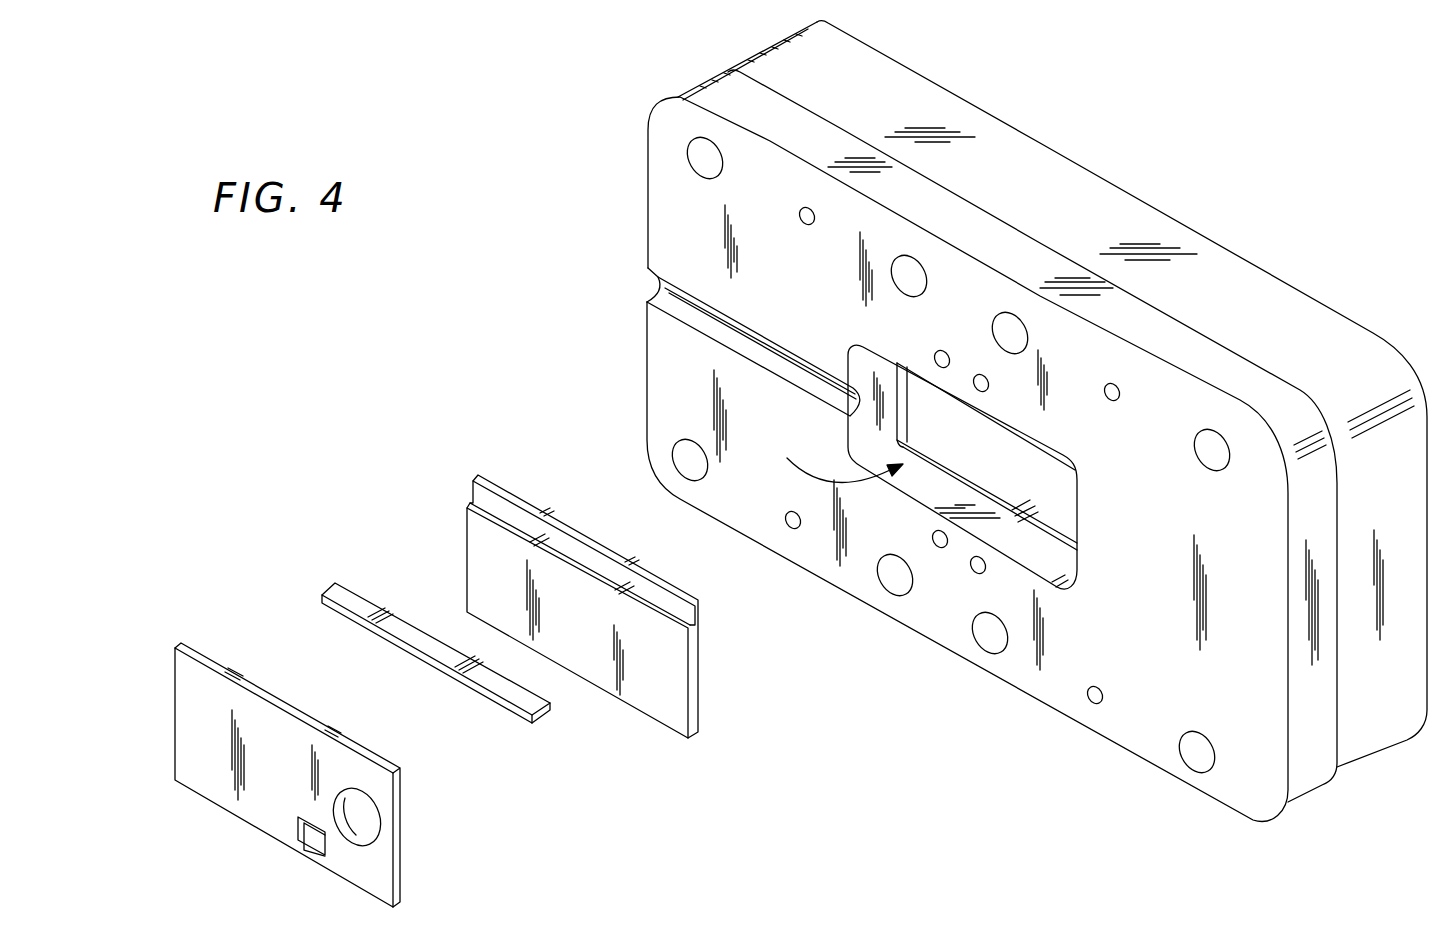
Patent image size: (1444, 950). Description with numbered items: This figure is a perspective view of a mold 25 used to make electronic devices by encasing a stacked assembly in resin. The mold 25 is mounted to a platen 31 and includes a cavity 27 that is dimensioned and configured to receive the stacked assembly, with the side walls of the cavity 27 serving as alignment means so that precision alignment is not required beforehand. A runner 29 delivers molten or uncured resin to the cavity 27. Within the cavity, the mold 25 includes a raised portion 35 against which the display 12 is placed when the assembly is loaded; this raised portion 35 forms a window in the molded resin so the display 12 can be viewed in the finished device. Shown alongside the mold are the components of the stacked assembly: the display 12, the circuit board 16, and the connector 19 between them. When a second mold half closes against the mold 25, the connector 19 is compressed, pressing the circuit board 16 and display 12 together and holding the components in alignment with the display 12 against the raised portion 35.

The display 12 is at (670, 678).
The circuit board 16 is at (187, 727).
The connector 19 is at (347, 595).
The mold 25 is at (670, 210).
The cavity 27 is at (824, 460).
The runner 29 is at (695, 315).
The platen 31 is at (1130, 226).
The raised portion 35 is at (1023, 465).